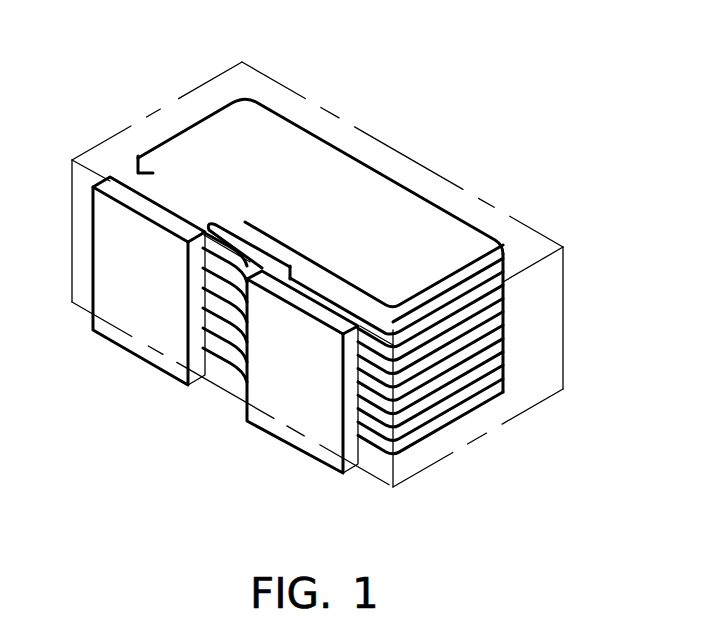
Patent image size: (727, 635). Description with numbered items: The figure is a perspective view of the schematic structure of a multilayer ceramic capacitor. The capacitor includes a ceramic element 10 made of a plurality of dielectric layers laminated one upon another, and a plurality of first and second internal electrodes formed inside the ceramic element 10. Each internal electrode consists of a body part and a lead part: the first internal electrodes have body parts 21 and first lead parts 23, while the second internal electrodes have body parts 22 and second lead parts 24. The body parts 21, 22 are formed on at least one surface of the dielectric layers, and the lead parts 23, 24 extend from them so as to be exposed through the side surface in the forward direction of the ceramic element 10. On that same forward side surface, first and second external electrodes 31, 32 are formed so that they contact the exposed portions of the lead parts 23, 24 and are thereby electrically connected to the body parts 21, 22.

The ceramic element 10 is at (370, 147).
The body part of first internal electrode 21 is at (270, 143).
The body part of second internal electrode 22 is at (470, 284).
The first lead part 23 is at (146, 187).
The second lead part 24 is at (353, 310).
The first external electrode 31 is at (111, 298).
The second external electrode 32 is at (322, 413).